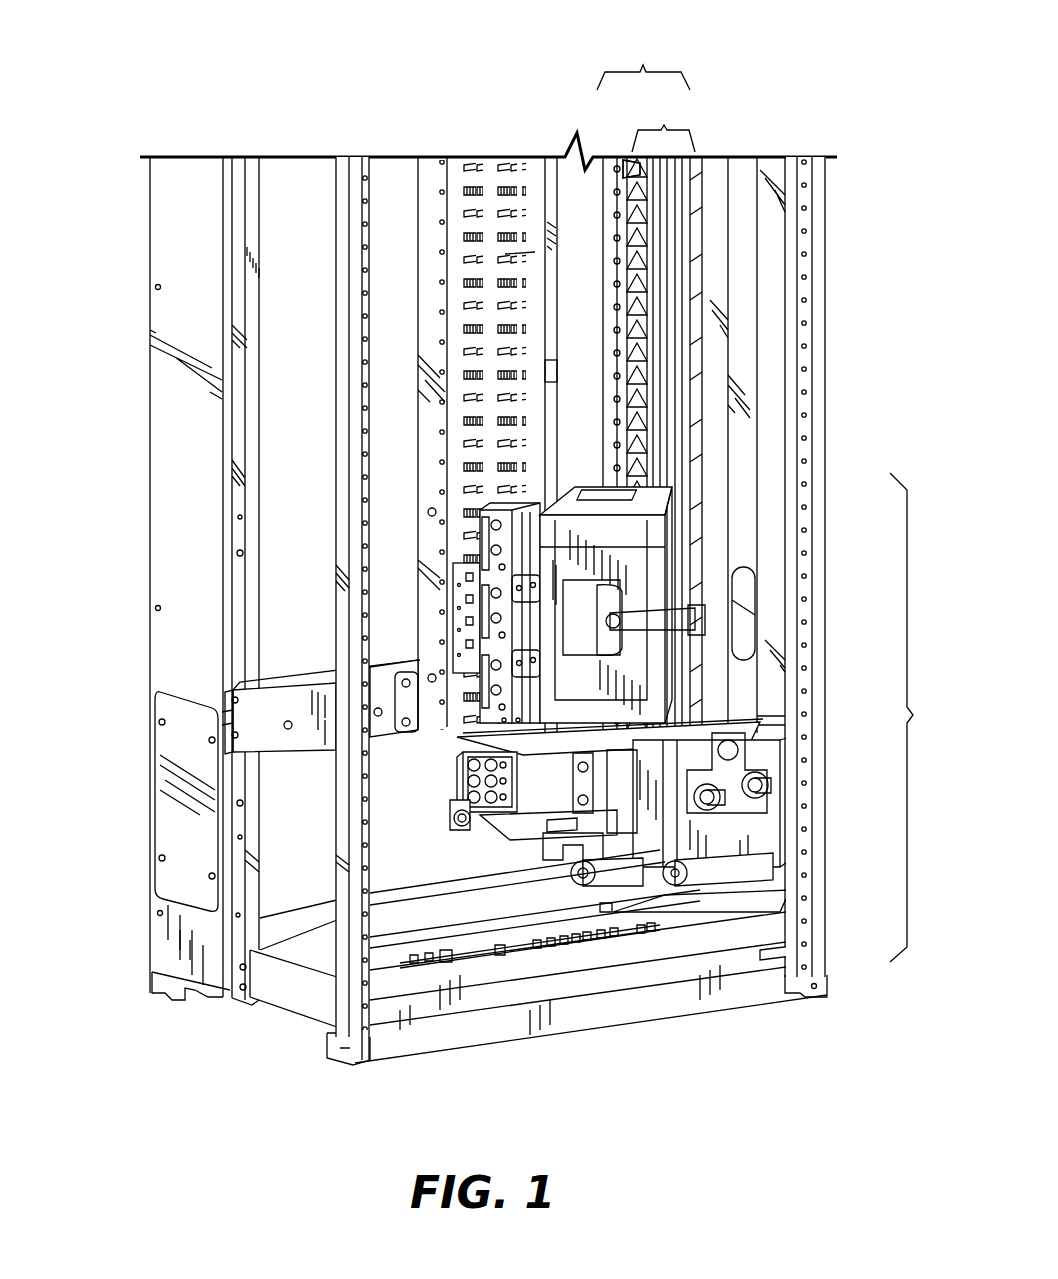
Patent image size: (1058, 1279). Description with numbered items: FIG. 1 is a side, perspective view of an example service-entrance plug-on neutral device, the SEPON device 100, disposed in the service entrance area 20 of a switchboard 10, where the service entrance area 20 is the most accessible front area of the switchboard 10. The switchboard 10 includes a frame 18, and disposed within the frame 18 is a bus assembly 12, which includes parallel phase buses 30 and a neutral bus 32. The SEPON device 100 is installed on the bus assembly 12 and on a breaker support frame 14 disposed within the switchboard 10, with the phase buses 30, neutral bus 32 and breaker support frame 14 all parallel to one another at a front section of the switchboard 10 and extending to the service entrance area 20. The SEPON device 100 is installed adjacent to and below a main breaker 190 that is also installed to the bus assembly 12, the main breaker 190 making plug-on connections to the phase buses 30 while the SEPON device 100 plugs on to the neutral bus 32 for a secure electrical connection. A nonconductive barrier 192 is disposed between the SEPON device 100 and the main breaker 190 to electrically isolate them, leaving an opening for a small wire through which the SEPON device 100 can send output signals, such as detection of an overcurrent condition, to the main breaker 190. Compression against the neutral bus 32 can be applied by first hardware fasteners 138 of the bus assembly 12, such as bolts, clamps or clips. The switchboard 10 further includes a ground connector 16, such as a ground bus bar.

The switchboard 10 is at (85, 212).
The bus assembly 12 is at (653, 55).
The breaker support frame 14 is at (790, 1023).
The ground connector 16 is at (490, 963).
The frame 18 is at (805, 673).
The service entrance area 20 is at (918, 718).
The phase buses 30 is at (675, 125).
The neutral bus 32 is at (623, 162).
The SEPON device 100 is at (432, 793).
The first hardware fasteners 138 is at (724, 805).
The main breaker 190 is at (466, 605).
The nonconductive barrier 192 is at (637, 738).